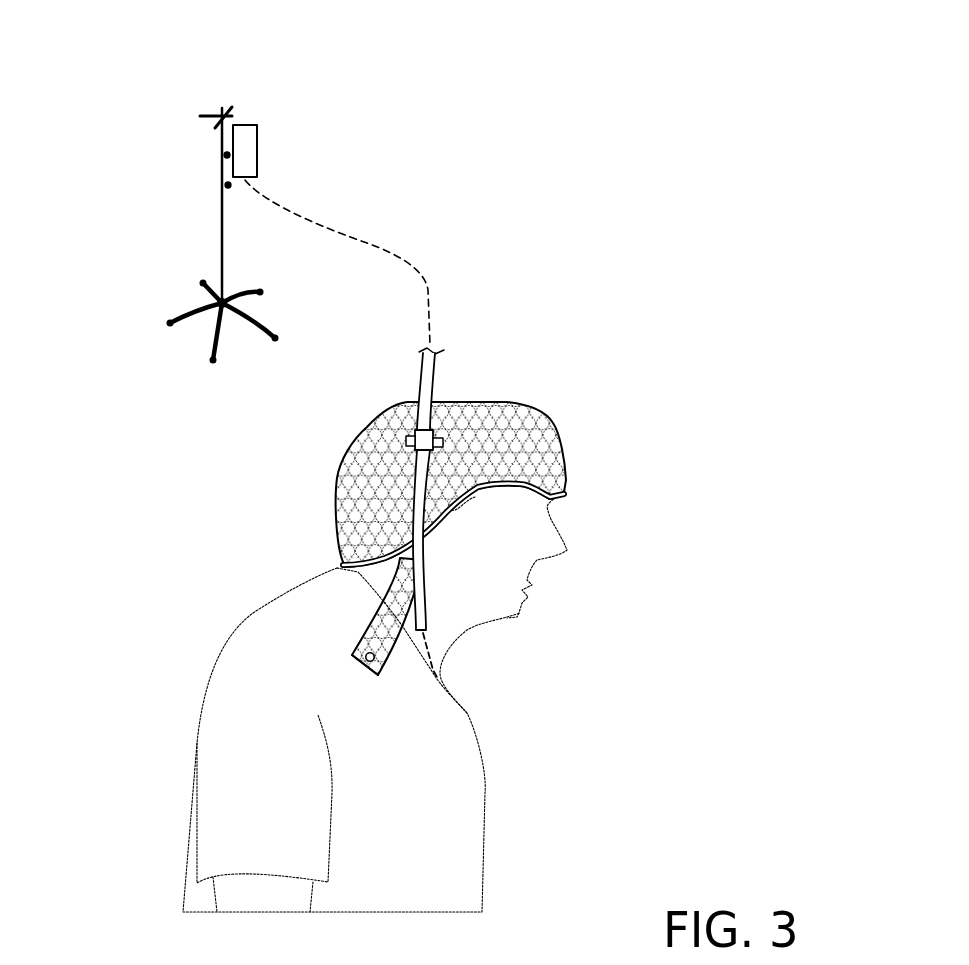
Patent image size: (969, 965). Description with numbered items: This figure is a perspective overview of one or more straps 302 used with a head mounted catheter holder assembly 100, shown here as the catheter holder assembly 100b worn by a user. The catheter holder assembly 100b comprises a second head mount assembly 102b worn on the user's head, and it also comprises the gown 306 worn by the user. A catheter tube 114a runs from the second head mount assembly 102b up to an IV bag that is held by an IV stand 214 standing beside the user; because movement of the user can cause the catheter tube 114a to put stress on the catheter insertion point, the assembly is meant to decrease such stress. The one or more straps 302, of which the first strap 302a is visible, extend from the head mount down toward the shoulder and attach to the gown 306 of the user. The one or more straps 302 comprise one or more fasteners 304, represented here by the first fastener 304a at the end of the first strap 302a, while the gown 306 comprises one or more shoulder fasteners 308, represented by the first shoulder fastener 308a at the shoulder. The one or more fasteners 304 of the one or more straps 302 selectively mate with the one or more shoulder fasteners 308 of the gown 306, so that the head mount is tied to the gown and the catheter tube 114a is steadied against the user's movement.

The IV stand 214 is at (207, 108).
The catheter tube 114a is at (423, 285).
The catheter holder assembly 100b is at (596, 352).
The catheter holder assembly 100 is at (441, 500).
The second head mount assembly 102b is at (557, 430).
The first strap 302a is at (370, 620).
The one or more straps 302 is at (231, 599).
The first fastener 304a is at (350, 656).
The one or more fasteners 304 is at (196, 612).
The first shoulder fastener 308a is at (352, 658).
The one or more shoulder fasteners 308 is at (211, 688).
The gown 306 is at (450, 788).